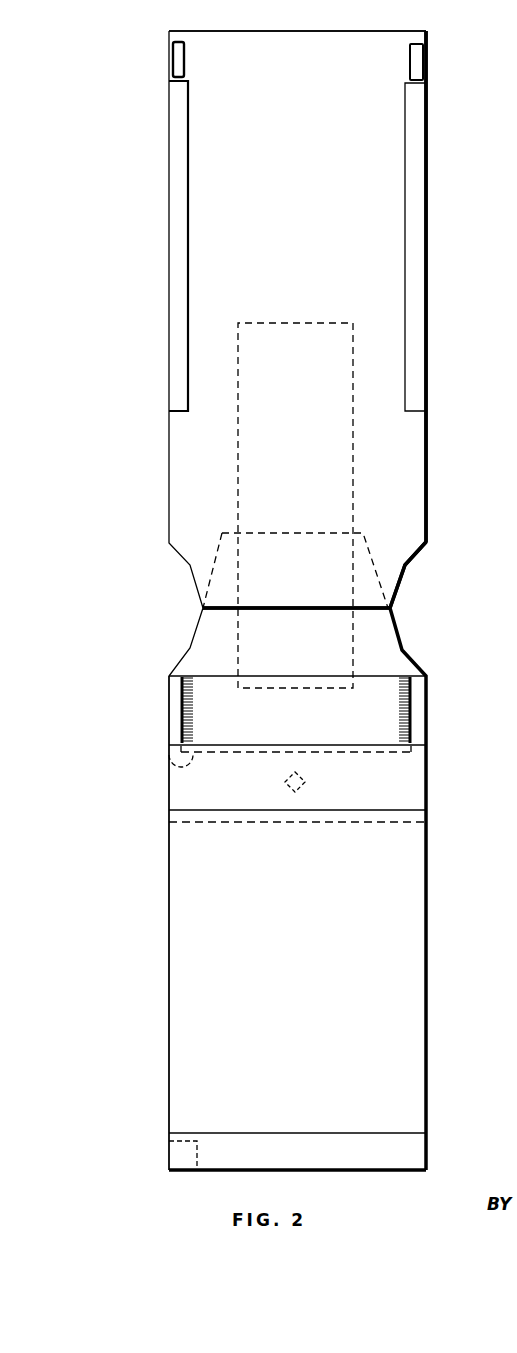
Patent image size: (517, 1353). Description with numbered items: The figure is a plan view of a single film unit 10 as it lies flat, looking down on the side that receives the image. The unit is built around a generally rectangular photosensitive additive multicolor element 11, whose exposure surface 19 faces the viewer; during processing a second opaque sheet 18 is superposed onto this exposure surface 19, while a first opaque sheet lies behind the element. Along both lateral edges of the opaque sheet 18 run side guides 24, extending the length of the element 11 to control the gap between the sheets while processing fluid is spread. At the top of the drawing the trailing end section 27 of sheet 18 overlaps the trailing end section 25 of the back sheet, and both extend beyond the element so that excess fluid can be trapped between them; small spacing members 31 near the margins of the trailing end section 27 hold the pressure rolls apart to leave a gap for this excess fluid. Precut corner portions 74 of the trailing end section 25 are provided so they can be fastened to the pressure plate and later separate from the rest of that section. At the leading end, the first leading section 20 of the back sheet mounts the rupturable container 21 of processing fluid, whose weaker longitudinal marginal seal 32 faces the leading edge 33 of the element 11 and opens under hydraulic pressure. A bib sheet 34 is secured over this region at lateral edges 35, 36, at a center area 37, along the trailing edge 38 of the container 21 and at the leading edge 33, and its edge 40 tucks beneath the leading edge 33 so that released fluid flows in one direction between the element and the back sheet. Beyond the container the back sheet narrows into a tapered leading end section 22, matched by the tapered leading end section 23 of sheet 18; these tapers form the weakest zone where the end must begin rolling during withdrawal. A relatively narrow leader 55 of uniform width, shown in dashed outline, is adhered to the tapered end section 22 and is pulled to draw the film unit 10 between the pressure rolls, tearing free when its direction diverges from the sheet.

The film unit 10 is at (140, 483).
The photosensitive additive multicolor element 11 is at (181, 930).
The second opaque sheet 18 is at (385, 277).
The exposure surface 19 is at (307, 967).
The first leading section 20 is at (420, 702).
The rupturable container 21 is at (362, 700).
The tapered leading end section 22 is at (373, 627).
The tapered leading end section 23 is at (392, 574).
The side guides 24 is at (175, 252).
The trailing end section 25 is at (427, 1143).
The trailing end section 27 is at (425, 36).
The spacing members 31 is at (176, 58).
The longitudinal marginal seal 32 is at (171, 757).
The leading edge 33 is at (365, 812).
The bib sheet 34 is at (205, 792).
The lateral edge 35 is at (412, 763).
The lateral edge 36 is at (200, 793).
The center area 37 is at (306, 779).
The trailing edge 38 is at (331, 745).
The edge 40 is at (381, 822).
The leader 55 is at (354, 440).
The corner portions 74 is at (178, 1153).